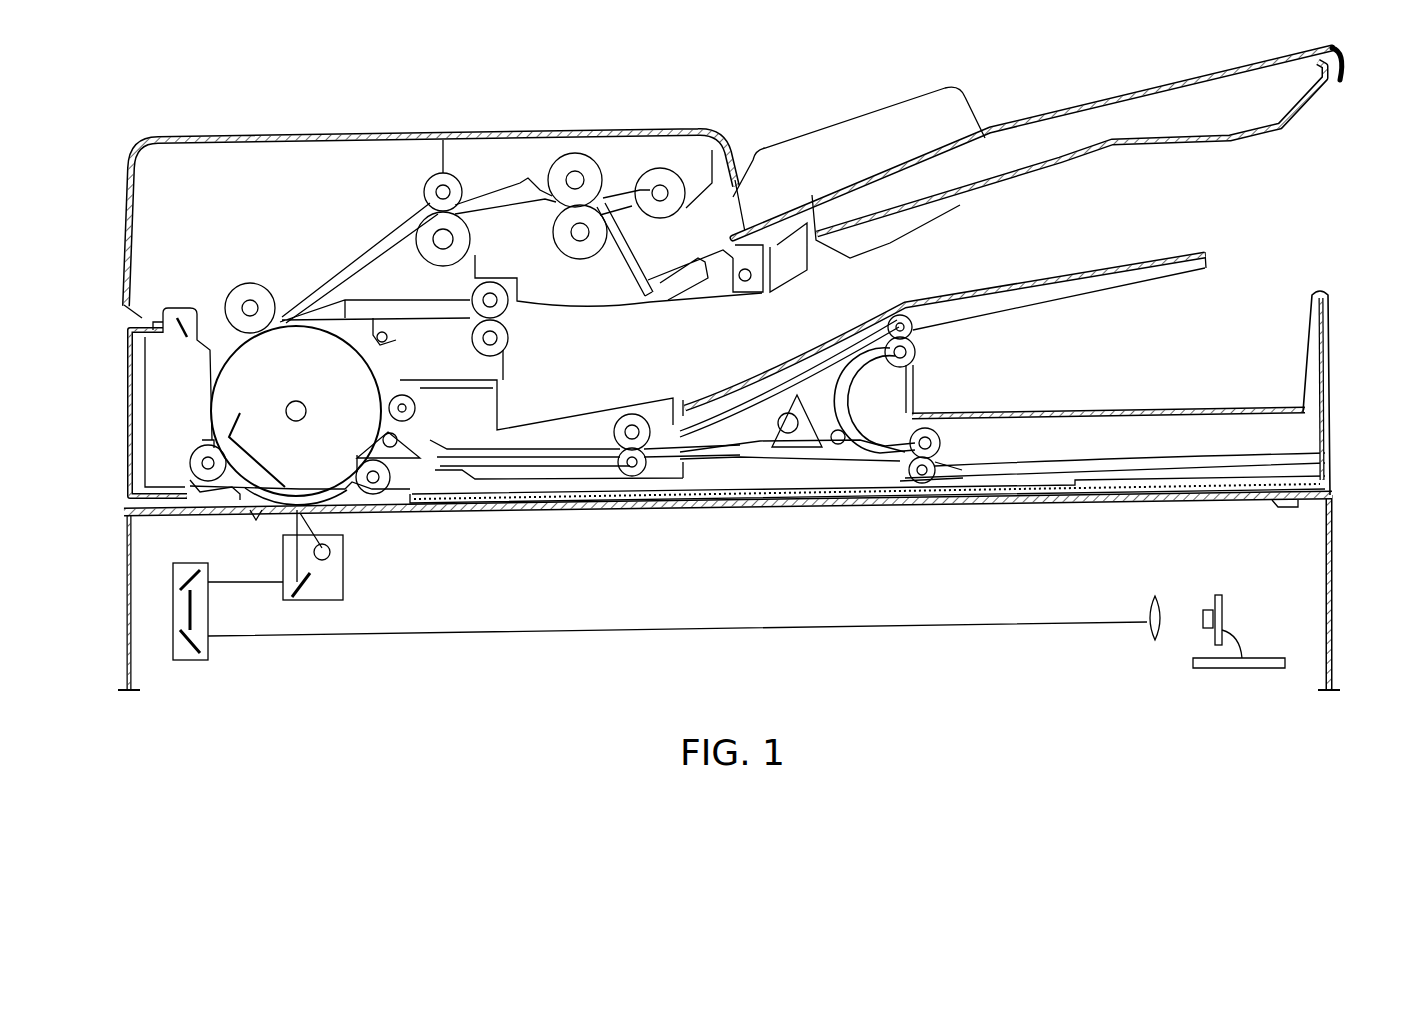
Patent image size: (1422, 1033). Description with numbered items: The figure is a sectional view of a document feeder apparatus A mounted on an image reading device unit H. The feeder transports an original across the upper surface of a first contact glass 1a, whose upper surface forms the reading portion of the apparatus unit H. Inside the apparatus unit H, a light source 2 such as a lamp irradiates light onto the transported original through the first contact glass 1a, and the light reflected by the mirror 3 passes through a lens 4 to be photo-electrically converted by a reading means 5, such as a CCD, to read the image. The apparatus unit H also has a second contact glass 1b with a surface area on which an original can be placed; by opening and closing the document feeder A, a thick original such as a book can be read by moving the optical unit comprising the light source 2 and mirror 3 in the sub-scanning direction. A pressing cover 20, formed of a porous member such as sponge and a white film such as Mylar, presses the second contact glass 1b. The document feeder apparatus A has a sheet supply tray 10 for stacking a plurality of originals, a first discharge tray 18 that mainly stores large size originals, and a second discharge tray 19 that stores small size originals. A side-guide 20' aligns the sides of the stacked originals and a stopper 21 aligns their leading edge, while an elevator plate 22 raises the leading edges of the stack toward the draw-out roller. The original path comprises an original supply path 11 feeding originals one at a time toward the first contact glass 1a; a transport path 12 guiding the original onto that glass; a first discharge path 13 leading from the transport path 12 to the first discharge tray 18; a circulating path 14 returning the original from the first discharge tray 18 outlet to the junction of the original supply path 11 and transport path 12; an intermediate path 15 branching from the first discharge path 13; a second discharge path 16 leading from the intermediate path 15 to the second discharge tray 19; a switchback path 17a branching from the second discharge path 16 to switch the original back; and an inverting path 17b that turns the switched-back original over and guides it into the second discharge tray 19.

The first contact glass 1a is at (283, 512).
The second contact glass 1b is at (614, 510).
The light source 2 is at (337, 555).
The mirror 3 is at (180, 590).
The lens 4 is at (1148, 613).
The reading means 5 is at (1207, 612).
The sheet supply tray 10 is at (1078, 105).
The original supply path 11 is at (383, 246).
The transport path 12 is at (210, 382).
The first discharge path 13 is at (396, 382).
The circulating path 14 is at (335, 300).
The intermediate path 15 is at (560, 455).
The second discharge path 16 is at (807, 385).
The switchback path 17a is at (933, 465).
The inverting path 17b is at (857, 440).
The first discharge tray 18 is at (1070, 290).
The second discharge tray 19 is at (1104, 412).
The pressing cover 20 is at (867, 527).
The side-guide 20' is at (859, 131).
The stopper 21 is at (632, 250).
The elevator plate 22 is at (676, 262).
The document feeder apparatus A is at (1277, 247).
The image reading device unit H is at (1333, 578).